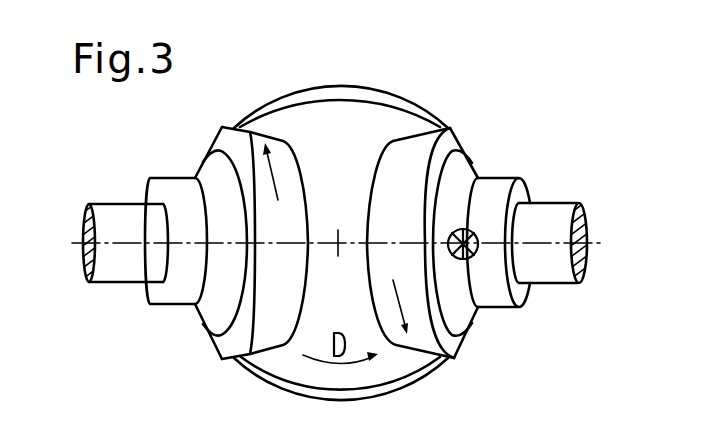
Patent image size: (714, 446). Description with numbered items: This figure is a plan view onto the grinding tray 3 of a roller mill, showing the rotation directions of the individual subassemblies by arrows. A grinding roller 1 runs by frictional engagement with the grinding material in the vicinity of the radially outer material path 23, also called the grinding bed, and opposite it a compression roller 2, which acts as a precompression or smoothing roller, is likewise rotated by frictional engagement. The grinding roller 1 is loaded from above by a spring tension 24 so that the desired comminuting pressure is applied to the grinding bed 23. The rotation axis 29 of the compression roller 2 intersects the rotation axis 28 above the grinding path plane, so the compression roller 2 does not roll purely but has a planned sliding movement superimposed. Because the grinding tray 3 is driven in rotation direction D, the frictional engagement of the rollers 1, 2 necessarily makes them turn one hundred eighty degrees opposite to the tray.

The grinding roller 1 is at (414, 155).
The compression roller 2 is at (250, 153).
The grinding tray 3 is at (252, 374).
The material path 23 is at (359, 116).
The spring tension 24 is at (477, 232).
The rotation axis 28 is at (341, 243).
The rotation axis 29 is at (128, 243).